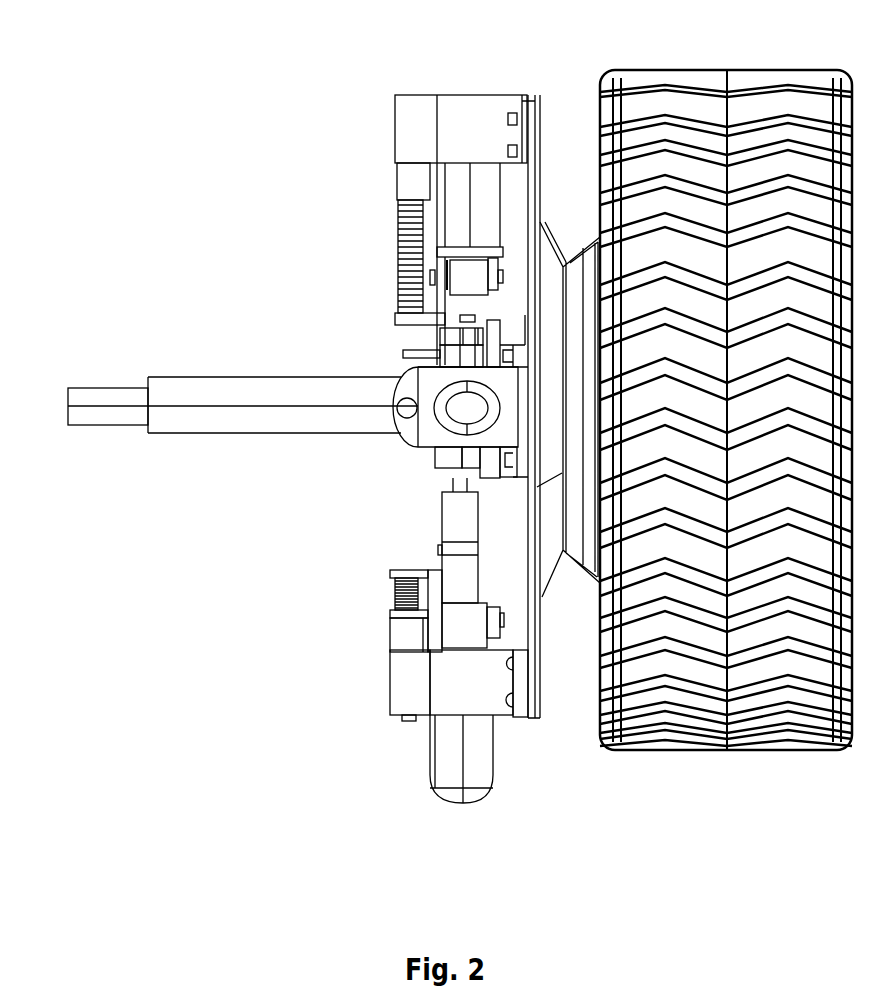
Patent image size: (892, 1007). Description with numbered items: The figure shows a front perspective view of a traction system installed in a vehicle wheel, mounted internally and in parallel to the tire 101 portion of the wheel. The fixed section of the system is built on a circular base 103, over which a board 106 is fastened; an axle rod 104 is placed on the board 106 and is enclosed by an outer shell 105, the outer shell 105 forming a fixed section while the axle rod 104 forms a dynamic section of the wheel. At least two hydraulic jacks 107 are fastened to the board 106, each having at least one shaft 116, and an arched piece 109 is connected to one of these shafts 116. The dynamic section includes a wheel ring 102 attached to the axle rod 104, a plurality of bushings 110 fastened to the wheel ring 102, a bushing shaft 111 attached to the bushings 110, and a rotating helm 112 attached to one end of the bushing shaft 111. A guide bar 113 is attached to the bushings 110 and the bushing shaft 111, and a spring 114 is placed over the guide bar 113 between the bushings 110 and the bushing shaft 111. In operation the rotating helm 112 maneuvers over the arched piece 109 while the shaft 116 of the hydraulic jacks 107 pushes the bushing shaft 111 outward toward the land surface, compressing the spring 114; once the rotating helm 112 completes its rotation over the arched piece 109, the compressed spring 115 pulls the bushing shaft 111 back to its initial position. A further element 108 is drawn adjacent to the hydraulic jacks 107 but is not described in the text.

The tire 101 is at (668, 76).
The wheel ring 102 is at (534, 93).
The circular base 103 is at (542, 220).
The axle rod 104 is at (97, 387).
The outer shell 105 is at (173, 435).
The board 106 is at (450, 468).
The hydraulic jacks 107 is at (440, 341).
The connecting plate 108 is at (403, 355).
The arched piece 109 is at (442, 519).
The bushings 110 is at (438, 695).
The bushing shaft 111 is at (438, 777).
The rotating helm 112 is at (473, 629).
The guide bar 113 is at (402, 222).
The spring 114 is at (400, 258).
The compressed spring 115 is at (390, 592).
The shaft 116 is at (455, 486).